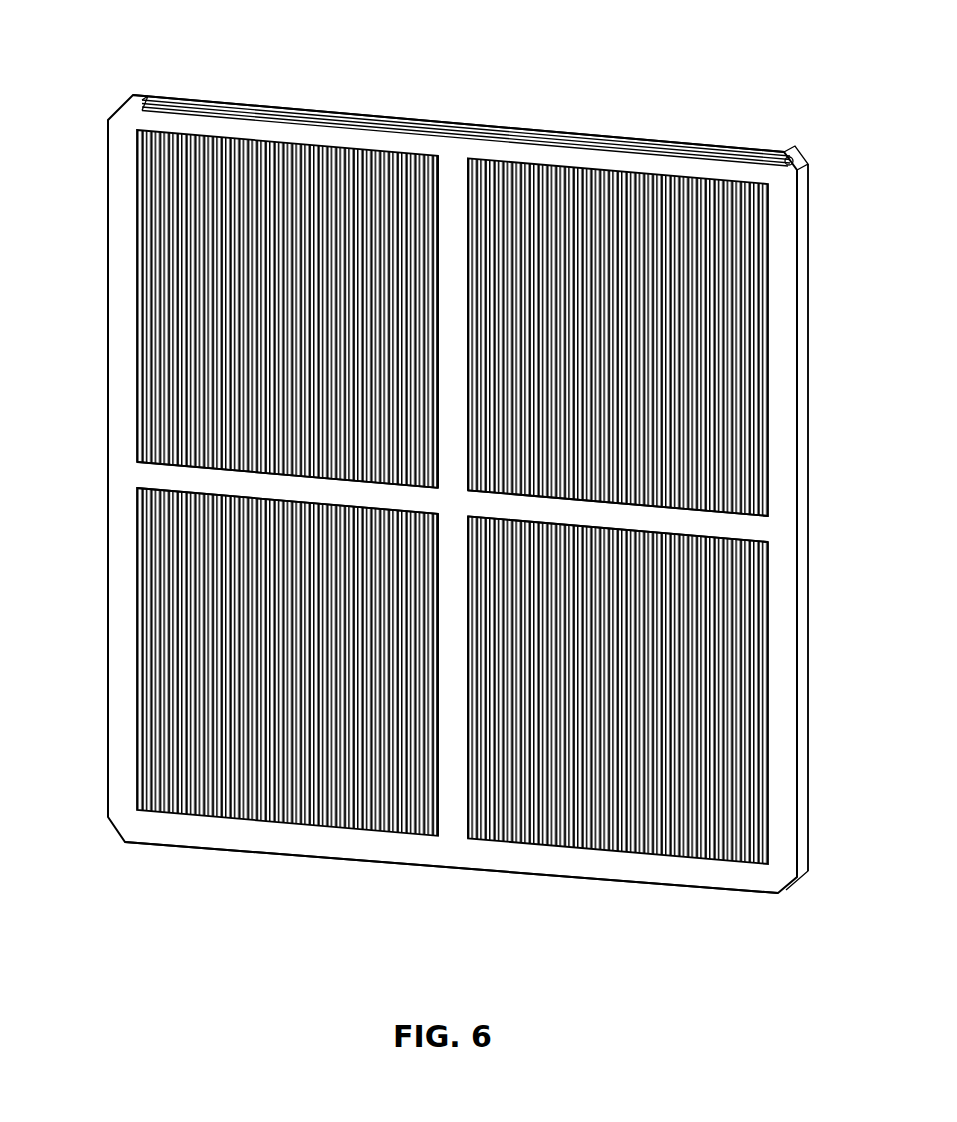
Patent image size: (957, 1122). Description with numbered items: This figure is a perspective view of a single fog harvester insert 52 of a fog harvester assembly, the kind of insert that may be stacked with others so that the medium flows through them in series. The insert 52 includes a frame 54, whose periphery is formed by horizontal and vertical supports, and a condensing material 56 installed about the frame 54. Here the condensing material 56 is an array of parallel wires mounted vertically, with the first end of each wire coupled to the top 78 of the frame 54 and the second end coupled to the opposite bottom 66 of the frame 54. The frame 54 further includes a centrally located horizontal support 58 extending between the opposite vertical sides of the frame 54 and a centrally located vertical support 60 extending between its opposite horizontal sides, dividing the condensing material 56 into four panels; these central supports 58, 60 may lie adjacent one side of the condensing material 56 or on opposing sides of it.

The fog harvester insert 52 is at (784, 55).
The frame 54 is at (800, 282).
The condensing material 56 is at (720, 402).
The centrally located horizontal support 58 is at (235, 478).
The centrally located vertical support 60 is at (453, 291).
The bottom of the frame 66 is at (620, 873).
The top of the frame 78 is at (273, 137).